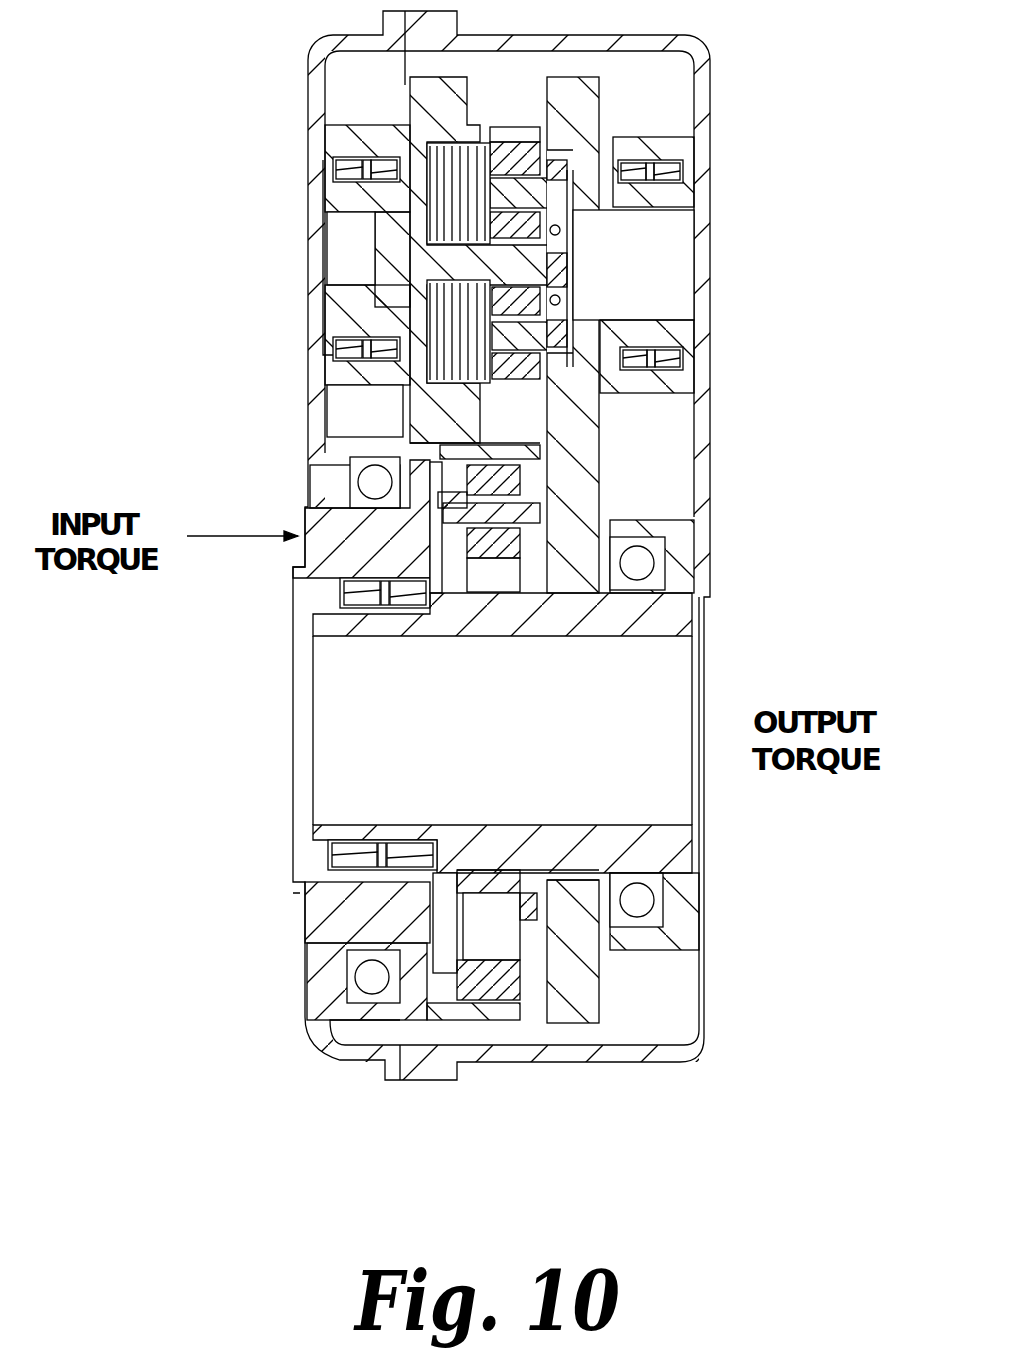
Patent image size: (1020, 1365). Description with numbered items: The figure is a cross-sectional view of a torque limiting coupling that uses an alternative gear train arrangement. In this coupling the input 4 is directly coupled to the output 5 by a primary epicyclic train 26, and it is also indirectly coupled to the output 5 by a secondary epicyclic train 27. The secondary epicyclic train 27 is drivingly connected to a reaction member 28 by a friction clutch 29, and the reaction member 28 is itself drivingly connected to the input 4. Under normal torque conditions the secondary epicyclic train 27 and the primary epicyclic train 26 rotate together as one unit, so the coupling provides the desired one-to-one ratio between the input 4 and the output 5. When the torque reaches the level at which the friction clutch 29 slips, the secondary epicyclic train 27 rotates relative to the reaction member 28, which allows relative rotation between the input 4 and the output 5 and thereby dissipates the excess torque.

The input 4 is at (333, 540).
The output 5 is at (620, 622).
The primary epicyclic train 26 is at (495, 538).
The secondary epicyclic train 27 is at (700, 208).
The reaction member 28 is at (378, 196).
The friction clutch 29 is at (430, 354).